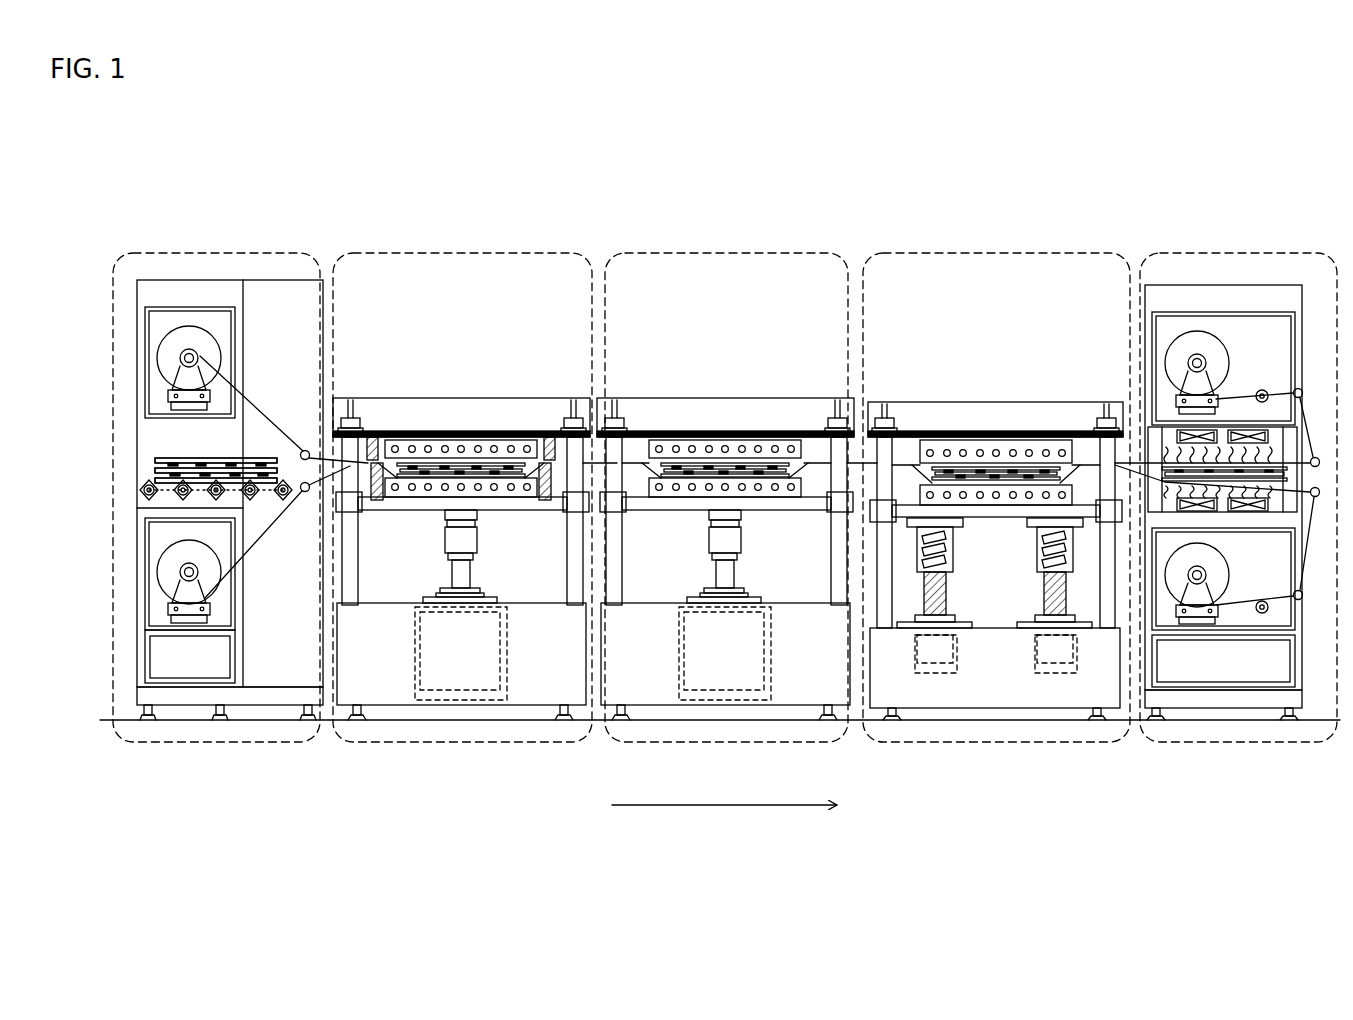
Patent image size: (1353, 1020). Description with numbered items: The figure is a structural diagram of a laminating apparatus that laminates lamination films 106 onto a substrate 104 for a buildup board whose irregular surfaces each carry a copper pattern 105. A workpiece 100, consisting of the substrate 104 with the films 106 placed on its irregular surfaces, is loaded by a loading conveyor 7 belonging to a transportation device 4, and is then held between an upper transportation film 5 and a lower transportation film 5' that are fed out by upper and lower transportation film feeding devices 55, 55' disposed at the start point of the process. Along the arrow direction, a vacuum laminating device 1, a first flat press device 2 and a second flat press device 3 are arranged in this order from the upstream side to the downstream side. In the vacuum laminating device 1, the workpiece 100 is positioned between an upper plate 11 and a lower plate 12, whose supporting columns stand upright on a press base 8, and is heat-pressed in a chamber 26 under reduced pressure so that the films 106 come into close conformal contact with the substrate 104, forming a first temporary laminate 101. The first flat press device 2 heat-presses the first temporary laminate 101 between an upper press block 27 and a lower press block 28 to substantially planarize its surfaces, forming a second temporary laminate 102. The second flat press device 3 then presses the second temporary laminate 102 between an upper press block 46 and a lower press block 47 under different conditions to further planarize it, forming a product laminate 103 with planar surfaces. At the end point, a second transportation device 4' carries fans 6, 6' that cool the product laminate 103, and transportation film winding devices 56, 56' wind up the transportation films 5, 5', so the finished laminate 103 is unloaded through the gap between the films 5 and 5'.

The vacuum laminating device 1 is at (481, 246).
The first flat press device 2 is at (729, 246).
The second flat press device 3 is at (1000, 246).
The transportation device 4 is at (224, 466).
The transportation device 4' is at (1238, 466).
The transportation film 5 is at (766, 410).
The transportation film 5' is at (772, 542).
The fan 6 is at (1222, 402).
The fan 6' is at (1222, 541).
The loading conveyor 7 is at (163, 493).
The press base 8 is at (1262, 488).
The upper plate 11 is at (541, 432).
The lower plate 12 is at (515, 506).
The chamber 26 is at (387, 440).
The upper press block 27 is at (785, 432).
The lower press block 28 is at (777, 506).
The upper press block 46 is at (1048, 435).
The lower press block 47 is at (990, 512).
The upper transportation film feeding device 55 is at (220, 362).
The lower transportation film feeding device 55' is at (223, 588).
The transportation film winding device 56 is at (1223, 368).
The transportation film winding device 56' is at (1223, 599).
The workpiece 100 is at (215, 138).
The first temporary laminate 101 is at (437, 470).
The second temporary laminate 102 is at (691, 470).
The product laminate 103 is at (955, 462).
The substrate 104 is at (195, 459).
The copper pattern 105 is at (178, 469).
The lamination film 106 is at (185, 479).